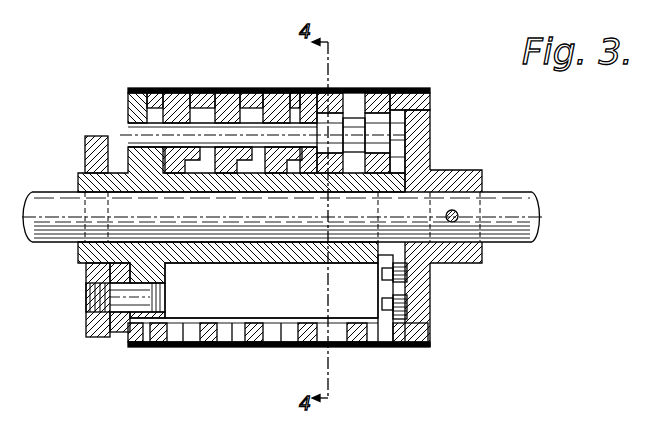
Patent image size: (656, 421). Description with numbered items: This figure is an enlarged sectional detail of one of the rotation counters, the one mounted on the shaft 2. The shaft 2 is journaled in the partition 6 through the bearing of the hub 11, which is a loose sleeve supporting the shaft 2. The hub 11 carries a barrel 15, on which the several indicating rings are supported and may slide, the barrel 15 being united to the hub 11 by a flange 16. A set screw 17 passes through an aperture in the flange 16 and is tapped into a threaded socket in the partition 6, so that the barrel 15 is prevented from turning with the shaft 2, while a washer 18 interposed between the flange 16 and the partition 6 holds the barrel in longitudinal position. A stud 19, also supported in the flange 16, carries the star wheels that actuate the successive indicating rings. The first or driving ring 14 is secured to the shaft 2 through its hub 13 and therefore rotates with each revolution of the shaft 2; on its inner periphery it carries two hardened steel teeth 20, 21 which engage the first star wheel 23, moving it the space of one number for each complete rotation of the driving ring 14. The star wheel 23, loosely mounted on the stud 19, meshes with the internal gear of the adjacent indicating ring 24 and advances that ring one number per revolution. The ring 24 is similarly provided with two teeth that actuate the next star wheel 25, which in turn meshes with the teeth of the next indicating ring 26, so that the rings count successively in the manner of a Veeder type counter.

The shaft 2 is at (522, 206).
The partition 6 is at (85, 146).
The hub 11 is at (78, 178).
The hub 13 is at (462, 170).
The first or driving ring 14 is at (414, 88).
The barrel 15 is at (220, 317).
The flange 16 is at (137, 88).
The set screw 17 is at (86, 297).
The washer 18 is at (128, 328).
The stud 19 is at (128, 126).
The hardened steel tooth 20 is at (385, 303).
The hardened steel tooth 21 is at (385, 273).
The first star wheel 23 is at (382, 90).
The indicating ring 24 is at (350, 97).
The star wheel 25 is at (330, 97).
The indicating ring 26 is at (302, 88).